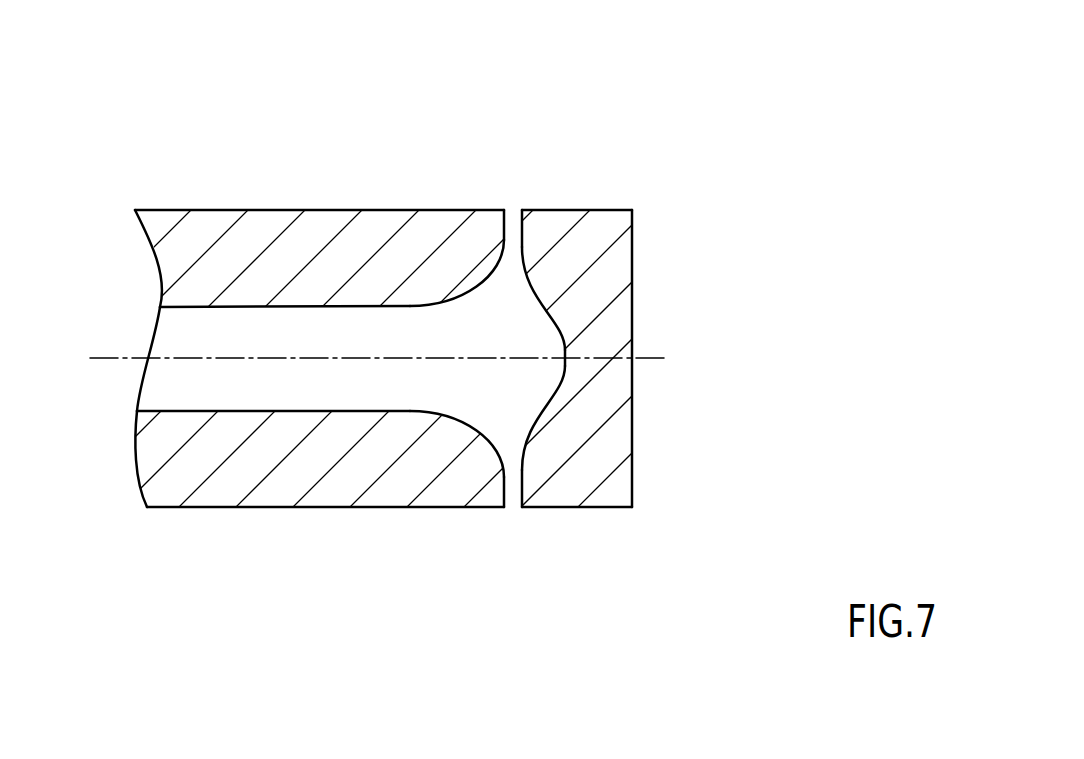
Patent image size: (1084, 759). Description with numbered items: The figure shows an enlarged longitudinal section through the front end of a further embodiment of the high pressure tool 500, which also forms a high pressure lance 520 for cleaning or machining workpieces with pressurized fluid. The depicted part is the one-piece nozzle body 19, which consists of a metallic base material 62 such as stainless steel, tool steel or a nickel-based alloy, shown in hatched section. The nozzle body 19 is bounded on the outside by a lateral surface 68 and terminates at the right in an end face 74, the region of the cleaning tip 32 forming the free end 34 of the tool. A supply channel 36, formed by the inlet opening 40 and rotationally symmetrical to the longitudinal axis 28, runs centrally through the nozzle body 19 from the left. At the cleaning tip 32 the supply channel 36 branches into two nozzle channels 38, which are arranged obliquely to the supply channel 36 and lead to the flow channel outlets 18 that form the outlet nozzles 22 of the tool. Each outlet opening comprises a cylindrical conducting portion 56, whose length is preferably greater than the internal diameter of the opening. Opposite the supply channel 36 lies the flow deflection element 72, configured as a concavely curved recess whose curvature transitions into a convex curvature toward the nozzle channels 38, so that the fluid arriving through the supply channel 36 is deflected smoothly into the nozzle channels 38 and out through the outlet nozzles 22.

The nozzle body 19 is at (257, 162).
The supply channel 36 is at (205, 300).
The metallic base material 62 is at (335, 210).
The lateral surface 68 is at (408, 210).
The cylindrical conducting portion 56 is at (483, 202).
The flow channel outlets 18 is at (510, 170).
The outlet nozzles 22 is at (501, 542).
The high pressure tool 500 is at (596, 117).
The high pressure lance 520 is at (663, 140).
The nozzle channels 38 is at (541, 235).
The cleaning tip 32 is at (665, 289).
The free end 34 is at (504, 360).
The flow deflection element 72 is at (607, 351).
The end face 74 is at (632, 417).
The inlet opening 40 is at (184, 307).
The longitudinal axis 28 is at (102, 360).